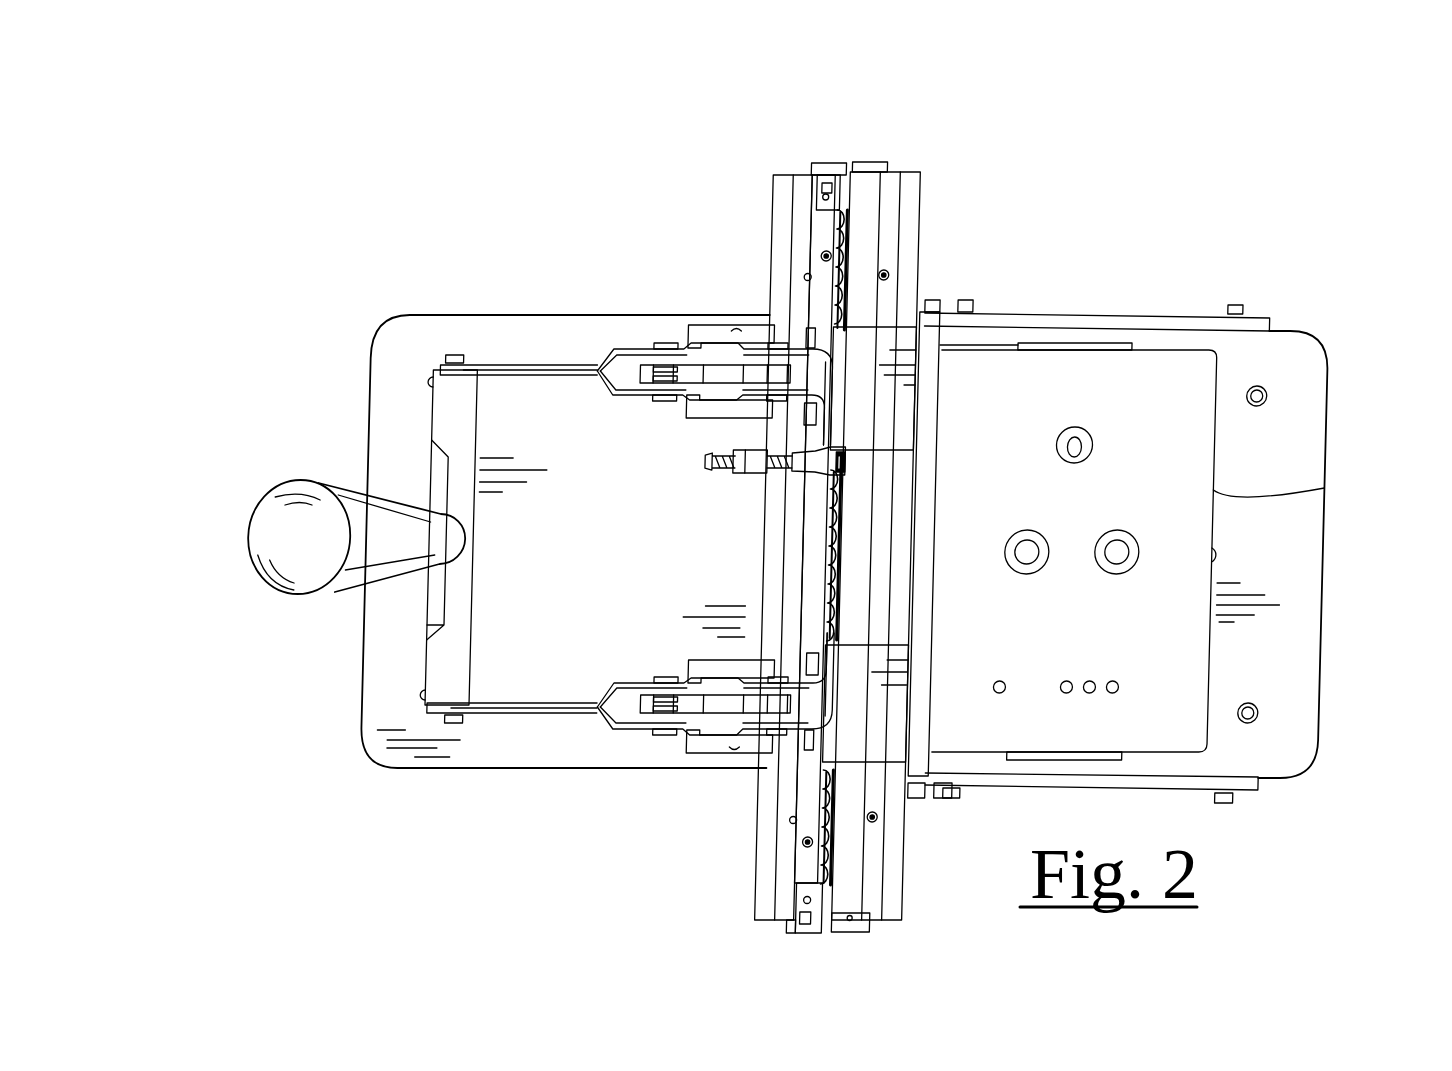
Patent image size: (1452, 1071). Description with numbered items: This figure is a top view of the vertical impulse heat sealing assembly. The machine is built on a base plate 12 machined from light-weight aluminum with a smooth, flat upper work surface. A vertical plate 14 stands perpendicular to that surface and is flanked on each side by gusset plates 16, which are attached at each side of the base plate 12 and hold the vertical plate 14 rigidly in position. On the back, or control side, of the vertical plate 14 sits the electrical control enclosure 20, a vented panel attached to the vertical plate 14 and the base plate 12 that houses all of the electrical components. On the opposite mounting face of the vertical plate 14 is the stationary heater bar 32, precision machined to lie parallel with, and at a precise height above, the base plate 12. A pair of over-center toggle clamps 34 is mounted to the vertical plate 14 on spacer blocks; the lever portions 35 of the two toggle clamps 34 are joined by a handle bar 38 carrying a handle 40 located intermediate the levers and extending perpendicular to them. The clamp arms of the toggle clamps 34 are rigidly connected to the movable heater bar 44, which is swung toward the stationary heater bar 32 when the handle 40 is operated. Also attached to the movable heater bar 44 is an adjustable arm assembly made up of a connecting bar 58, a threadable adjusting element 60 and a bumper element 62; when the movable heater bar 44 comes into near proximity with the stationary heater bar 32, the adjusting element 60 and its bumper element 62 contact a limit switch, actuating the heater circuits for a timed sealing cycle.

The base plate 12 is at (578, 312).
The vertical plate 14 is at (940, 385).
The gusset plates 16 is at (1130, 316).
The electrical control enclosure 20 is at (1228, 497).
The stationary heater bar 32 is at (934, 236).
The over-center toggle clamps 34 is at (622, 343).
The lever portion 35 is at (520, 360).
The handle bar 38 is at (430, 420).
The handle 40 is at (292, 485).
The movable heater bar 44 is at (807, 155).
The connecting bar 58 is at (757, 474).
The threadable adjusting element 60 is at (712, 462).
The bumper element 62 is at (817, 480).